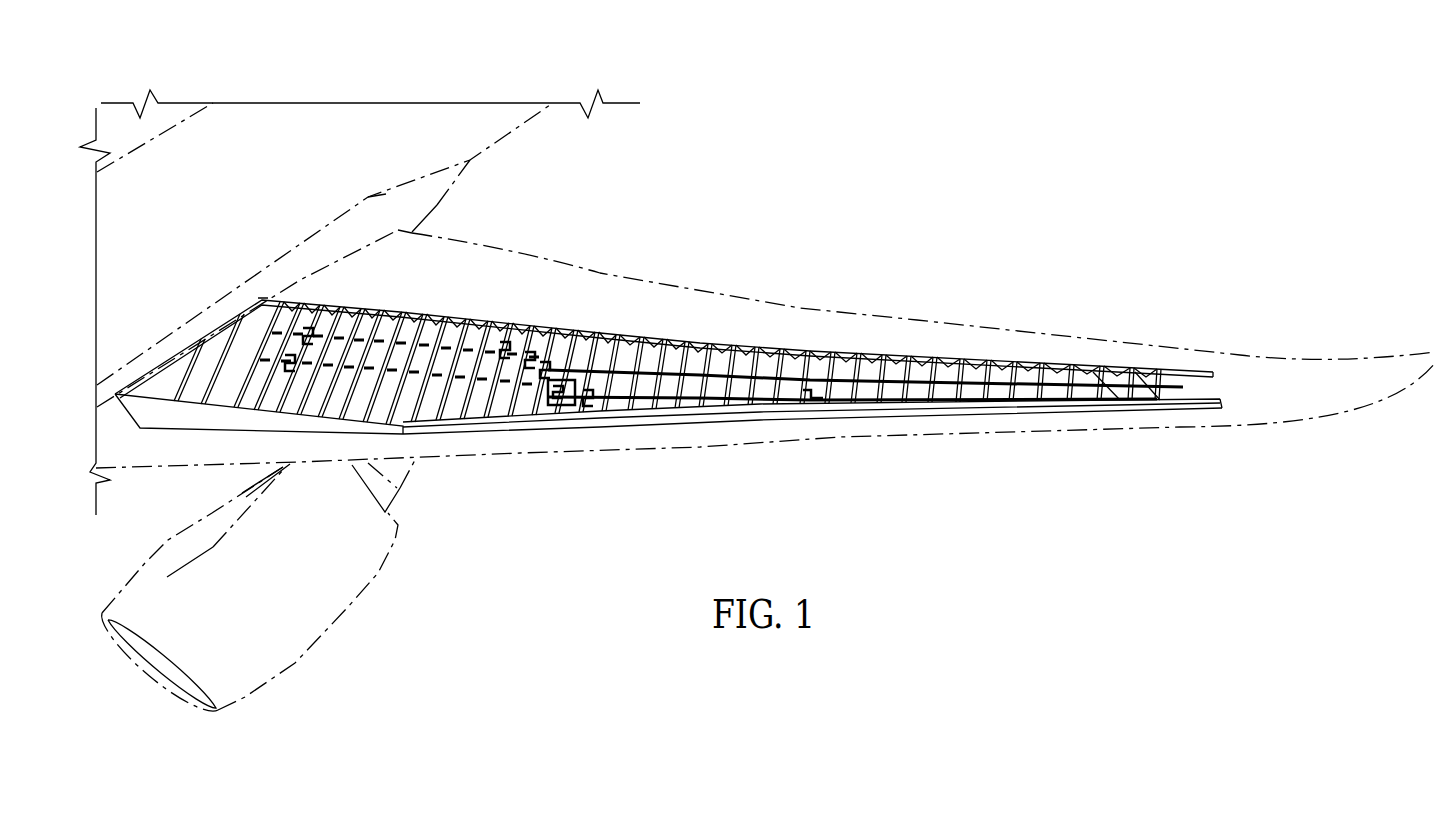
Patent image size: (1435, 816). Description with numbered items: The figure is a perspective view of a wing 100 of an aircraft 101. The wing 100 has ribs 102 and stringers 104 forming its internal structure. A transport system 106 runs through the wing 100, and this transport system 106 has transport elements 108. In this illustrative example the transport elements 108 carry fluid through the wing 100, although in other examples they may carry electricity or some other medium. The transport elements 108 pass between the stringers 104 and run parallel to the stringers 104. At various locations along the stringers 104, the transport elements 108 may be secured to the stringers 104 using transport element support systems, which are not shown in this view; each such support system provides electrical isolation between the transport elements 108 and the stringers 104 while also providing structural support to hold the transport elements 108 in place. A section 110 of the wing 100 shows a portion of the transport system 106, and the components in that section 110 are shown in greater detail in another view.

The wing 100 is at (891, 315).
The aircraft 101 is at (1046, 271).
The ribs 102 is at (753, 355).
The stringers 104 is at (583, 338).
The transport system 106 is at (632, 409).
The transport elements 108 is at (922, 401).
The section 110 is at (559, 413).